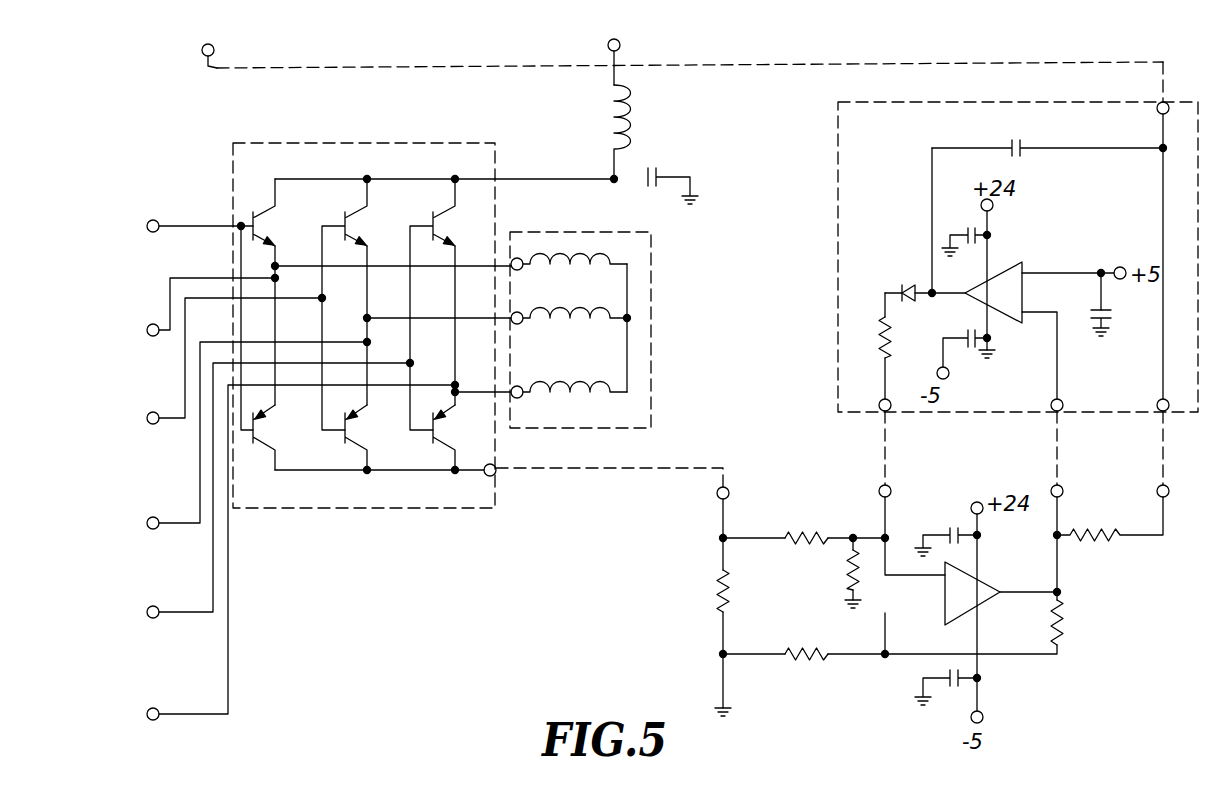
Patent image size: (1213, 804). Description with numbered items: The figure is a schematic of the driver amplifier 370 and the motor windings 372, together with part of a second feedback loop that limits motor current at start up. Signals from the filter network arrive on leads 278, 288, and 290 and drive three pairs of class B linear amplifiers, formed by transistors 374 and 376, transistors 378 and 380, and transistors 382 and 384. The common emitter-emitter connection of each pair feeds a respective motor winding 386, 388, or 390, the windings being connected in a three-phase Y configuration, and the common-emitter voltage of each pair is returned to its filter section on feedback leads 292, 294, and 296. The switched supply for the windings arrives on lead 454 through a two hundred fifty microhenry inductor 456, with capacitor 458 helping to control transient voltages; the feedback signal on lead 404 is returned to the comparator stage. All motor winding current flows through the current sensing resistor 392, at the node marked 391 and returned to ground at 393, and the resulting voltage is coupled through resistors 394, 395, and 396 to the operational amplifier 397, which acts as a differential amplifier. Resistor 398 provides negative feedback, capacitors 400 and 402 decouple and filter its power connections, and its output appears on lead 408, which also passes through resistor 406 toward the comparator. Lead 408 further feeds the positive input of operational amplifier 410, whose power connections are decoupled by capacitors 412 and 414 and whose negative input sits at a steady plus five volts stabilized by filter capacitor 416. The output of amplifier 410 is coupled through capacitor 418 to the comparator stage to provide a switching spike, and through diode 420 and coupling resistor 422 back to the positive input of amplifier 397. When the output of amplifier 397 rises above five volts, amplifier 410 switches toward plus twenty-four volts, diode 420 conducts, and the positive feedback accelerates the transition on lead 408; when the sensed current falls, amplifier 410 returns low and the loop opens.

The lead 278 is at (180, 222).
The lead 288 is at (184, 388).
The lead 290 is at (171, 607).
The feedback lead 292 is at (166, 300).
The feedback lead 294 is at (169, 518).
The feedback lead 296 is at (174, 709).
The driver amplifier 370 is at (285, 142).
The motor windings 372 is at (651, 325).
The transistor 374 is at (253, 209).
The transistor 376 is at (251, 444).
The transistor 378 is at (344, 214).
The transistor 380 is at (345, 440).
The transistor 382 is at (432, 214).
The transistor 384 is at (433, 440).
The motor winding 386 is at (566, 266).
The motor winding 388 is at (566, 320).
The motor winding 390 is at (576, 393).
The current sense terminal 391 is at (477, 471).
The current sensing resistor 392 is at (714, 587).
The ground terminal 393 is at (718, 683).
The resistor 394 is at (809, 534).
The resistor 395 is at (851, 571).
The resistor 396 is at (794, 650).
The operational amplifier 397 is at (944, 592).
The resistor 398 is at (1065, 622).
The capacitor 400 is at (948, 530).
The capacitor 402 is at (945, 676).
The lead 404 is at (209, 64).
The resistor 406 is at (1110, 538).
The output lead 408 is at (1060, 440).
The operational amplifier 410 is at (1003, 280).
The capacitor 412 is at (967, 230).
The capacitor 414 is at (967, 335).
The filter capacitor 416 is at (1108, 306).
The capacitor 418 is at (1010, 141).
The diode 420 is at (906, 283).
The coupling resistor 422 is at (890, 338).
The lead 454 is at (621, 50).
The inductor 456 is at (625, 112).
The capacitor 458 is at (668, 152).